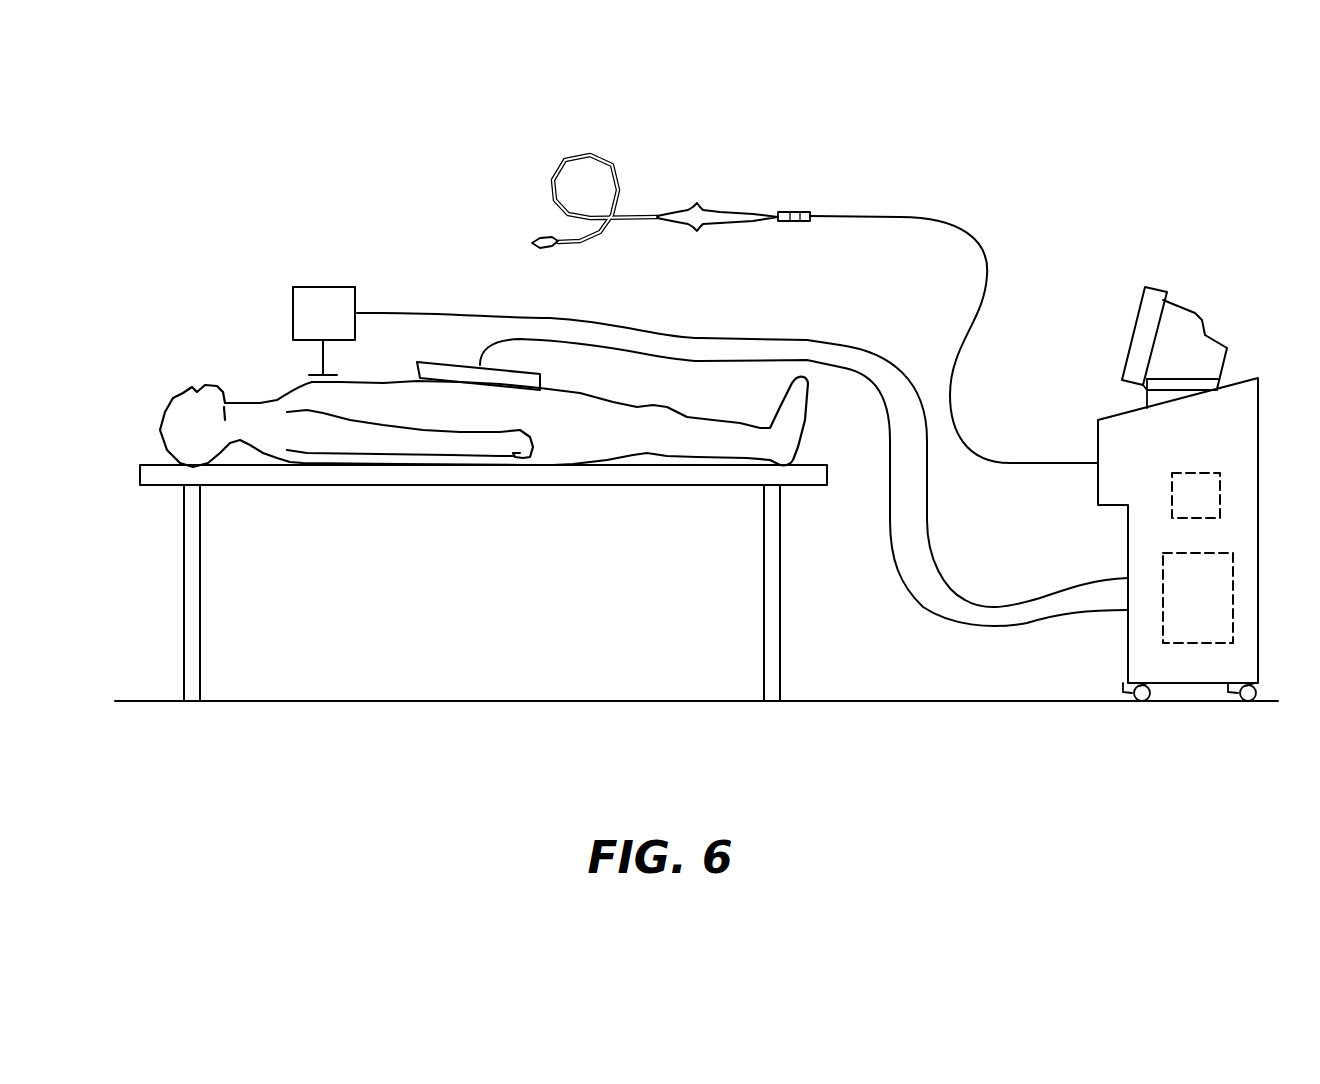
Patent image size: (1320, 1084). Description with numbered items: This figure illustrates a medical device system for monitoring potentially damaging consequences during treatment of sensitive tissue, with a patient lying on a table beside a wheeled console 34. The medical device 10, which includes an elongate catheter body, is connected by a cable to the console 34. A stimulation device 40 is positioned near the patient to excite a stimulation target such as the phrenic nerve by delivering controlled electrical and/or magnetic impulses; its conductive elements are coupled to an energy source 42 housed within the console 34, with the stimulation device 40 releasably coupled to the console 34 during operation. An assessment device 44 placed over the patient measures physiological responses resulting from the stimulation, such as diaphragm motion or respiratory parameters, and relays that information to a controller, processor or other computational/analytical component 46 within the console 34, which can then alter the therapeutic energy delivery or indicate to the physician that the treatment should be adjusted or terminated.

The medical device 10 is at (730, 210).
The console 34 is at (1171, 451).
The stimulation device 40 is at (309, 330).
The energy source 42 is at (1182, 506).
The assessment device 44 is at (452, 365).
The controller, processor or other computational/analytical component 46 is at (1183, 606).